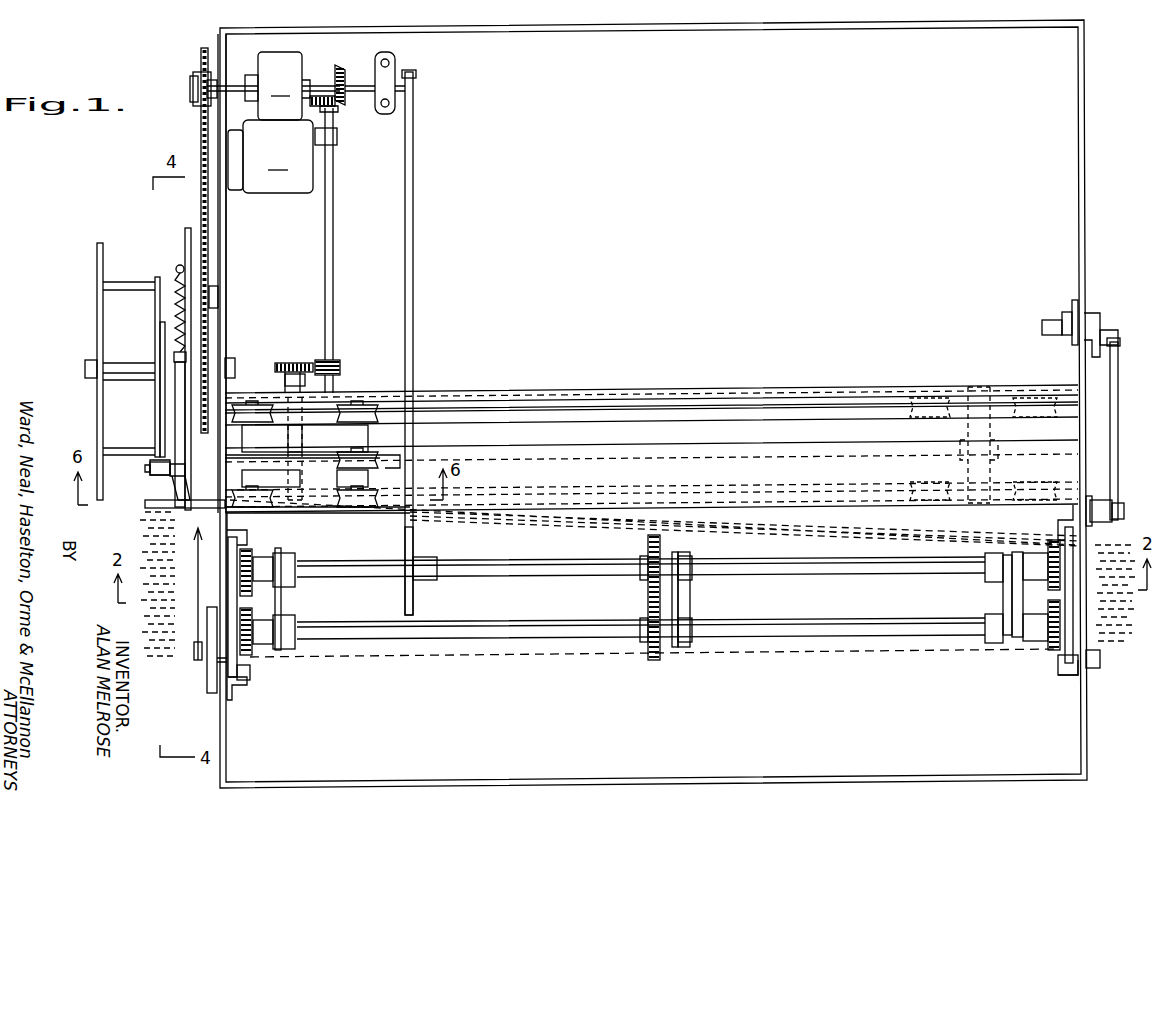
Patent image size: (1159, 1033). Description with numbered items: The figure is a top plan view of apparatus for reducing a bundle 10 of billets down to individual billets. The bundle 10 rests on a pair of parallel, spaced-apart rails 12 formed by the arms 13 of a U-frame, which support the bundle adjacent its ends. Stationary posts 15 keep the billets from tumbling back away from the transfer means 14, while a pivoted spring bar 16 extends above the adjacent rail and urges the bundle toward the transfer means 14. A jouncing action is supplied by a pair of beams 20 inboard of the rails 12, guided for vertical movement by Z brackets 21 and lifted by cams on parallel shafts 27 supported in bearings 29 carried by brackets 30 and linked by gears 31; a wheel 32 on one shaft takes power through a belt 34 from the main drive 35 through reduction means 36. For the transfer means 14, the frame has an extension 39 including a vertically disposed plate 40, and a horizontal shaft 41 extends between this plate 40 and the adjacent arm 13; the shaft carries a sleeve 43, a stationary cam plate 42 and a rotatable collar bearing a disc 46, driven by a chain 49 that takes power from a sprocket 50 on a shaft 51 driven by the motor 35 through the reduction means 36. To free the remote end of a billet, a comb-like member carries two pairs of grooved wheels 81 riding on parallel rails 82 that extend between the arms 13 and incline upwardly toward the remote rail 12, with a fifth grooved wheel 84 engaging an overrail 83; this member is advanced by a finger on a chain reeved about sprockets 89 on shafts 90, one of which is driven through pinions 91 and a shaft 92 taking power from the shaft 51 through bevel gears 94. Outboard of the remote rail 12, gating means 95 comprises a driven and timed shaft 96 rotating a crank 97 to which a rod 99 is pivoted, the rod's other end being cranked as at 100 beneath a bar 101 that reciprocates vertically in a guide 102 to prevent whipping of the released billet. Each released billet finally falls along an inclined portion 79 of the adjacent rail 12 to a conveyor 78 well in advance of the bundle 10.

The bundle 10 is at (1135, 663).
The rails 12 is at (1078, 213).
The arms 13 is at (225, 481).
The transfer means 14 is at (145, 440).
The stationary posts 15 is at (212, 685).
The spring bar 16 is at (202, 660).
The beams 20 is at (250, 670).
The Z brackets 21 is at (235, 690).
The parallel shafts 27 is at (548, 575).
The bearings 29 is at (288, 557).
The brackets 30 is at (305, 650).
The gears 31 is at (645, 615).
The wheel 32 is at (413, 590).
The belt 34 is at (413, 212).
The main drive 35 is at (270, 156).
The reduction means 36 is at (299, 86).
The extension 39 is at (86, 326).
The vertically disposed plate 40 is at (97, 340).
The horizontal shaft 41 is at (88, 372).
The cam plate 42 is at (155, 312).
The sleeve 43 is at (130, 368).
The plate or disc 46 is at (186, 230).
The chain 49 is at (202, 140).
The sprocket 50 is at (197, 100).
The shaft 51 is at (233, 82).
The conveyor 78 is at (220, 228).
The inclined portion 79 is at (227, 292).
The grooved wheels 81 is at (242, 402).
The parallel rails 82 is at (703, 490).
The overrail 83 is at (525, 448).
The fifth grooved wheel 84 is at (370, 455).
The sprockets 89 is at (318, 454).
The shafts 90 is at (290, 388).
The pinions 91 is at (303, 362).
The shaft 92 is at (333, 197).
The bevel gears 94 is at (343, 96).
The gating means 95 is at (1115, 313).
The driven and timed shaft 96 is at (1065, 312).
The crank 97 is at (1105, 340).
The rod 99 is at (1115, 410).
The crank 100 is at (1120, 510).
The bar 101 is at (1100, 500).
The guide 102 is at (1105, 520).